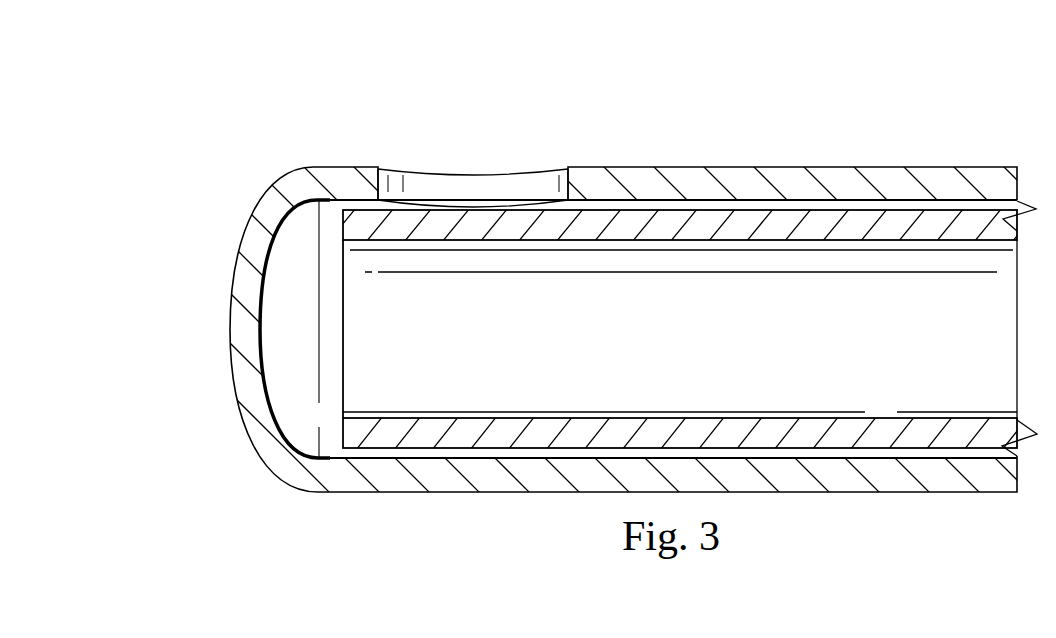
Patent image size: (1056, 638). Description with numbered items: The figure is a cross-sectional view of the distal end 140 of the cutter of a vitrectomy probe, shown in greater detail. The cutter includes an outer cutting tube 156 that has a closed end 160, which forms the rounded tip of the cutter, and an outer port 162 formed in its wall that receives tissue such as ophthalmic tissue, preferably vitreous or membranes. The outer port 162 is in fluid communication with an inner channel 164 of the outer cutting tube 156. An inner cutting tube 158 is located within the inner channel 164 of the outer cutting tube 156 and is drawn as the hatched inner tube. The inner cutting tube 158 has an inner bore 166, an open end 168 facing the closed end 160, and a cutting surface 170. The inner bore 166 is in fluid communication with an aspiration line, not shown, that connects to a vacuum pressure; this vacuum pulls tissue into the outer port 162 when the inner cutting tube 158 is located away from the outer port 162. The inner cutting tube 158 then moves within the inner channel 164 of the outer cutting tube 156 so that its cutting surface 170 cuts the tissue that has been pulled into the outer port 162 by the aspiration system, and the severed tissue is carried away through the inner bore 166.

The distal end 140 is at (768, 86).
The outer cutting tube 156 is at (935, 172).
The inner cutting tube 158 is at (880, 428).
The closed end 160 is at (233, 280).
The outer port 162 is at (472, 185).
The inner channel 164 is at (485, 453).
The inner bore 166 is at (704, 345).
The open end 168 is at (342, 373).
The cutting surface 170 is at (343, 228).